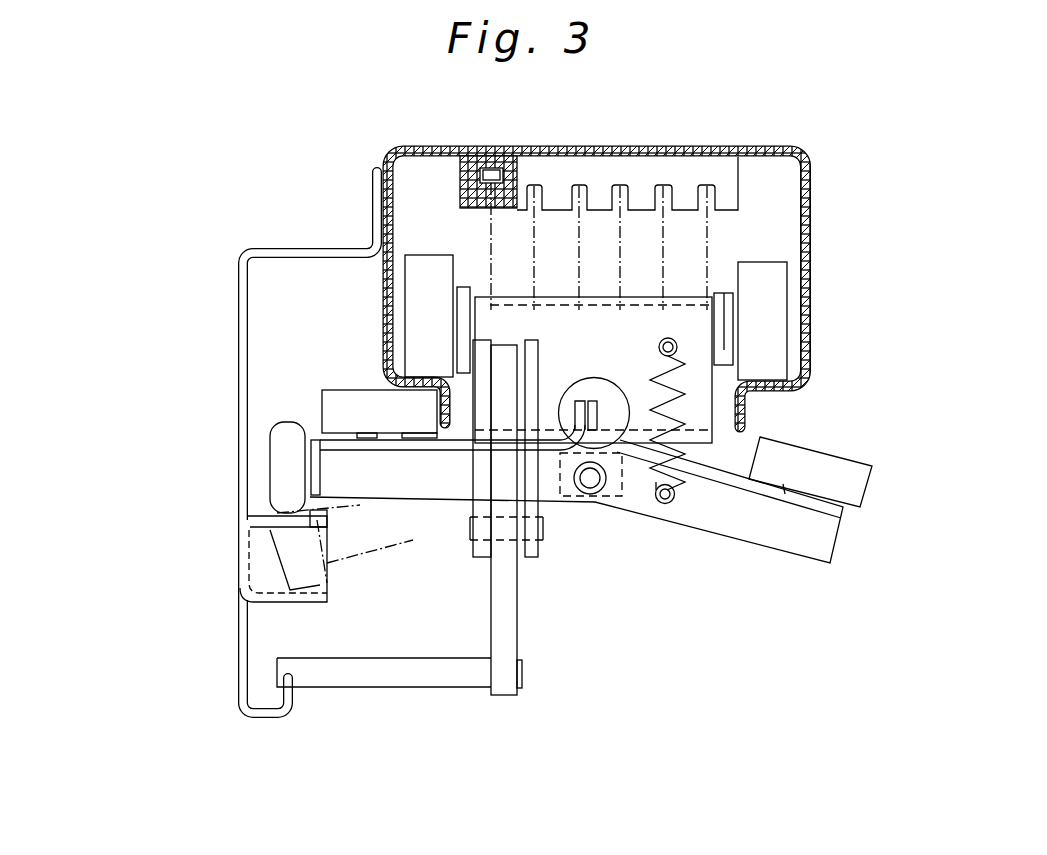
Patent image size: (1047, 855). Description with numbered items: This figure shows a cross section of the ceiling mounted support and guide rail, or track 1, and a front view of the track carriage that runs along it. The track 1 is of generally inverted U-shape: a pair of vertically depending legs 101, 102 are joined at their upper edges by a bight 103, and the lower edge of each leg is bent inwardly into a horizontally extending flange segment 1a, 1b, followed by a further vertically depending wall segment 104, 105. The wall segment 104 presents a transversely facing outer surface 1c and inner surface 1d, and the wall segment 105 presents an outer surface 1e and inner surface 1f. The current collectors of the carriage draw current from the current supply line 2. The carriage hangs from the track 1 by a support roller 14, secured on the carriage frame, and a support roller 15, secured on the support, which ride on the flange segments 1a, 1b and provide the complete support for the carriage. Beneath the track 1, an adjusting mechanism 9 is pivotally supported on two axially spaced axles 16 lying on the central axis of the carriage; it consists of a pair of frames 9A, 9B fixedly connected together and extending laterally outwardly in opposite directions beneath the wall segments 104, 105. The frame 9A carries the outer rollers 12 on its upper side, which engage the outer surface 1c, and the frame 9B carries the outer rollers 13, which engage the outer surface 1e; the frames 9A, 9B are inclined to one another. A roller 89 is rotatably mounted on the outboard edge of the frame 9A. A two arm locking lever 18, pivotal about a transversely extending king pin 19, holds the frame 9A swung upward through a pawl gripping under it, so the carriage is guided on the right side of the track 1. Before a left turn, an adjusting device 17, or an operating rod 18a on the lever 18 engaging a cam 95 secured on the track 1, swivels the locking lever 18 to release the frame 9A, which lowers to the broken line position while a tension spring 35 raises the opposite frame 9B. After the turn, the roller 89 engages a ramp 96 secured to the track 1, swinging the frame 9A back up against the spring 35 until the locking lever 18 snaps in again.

The track 1 is at (447, 140).
The flange segment 1a is at (423, 370).
The flange segment 1b is at (764, 372).
The outer surface 1c is at (438, 402).
The inner surface 1d is at (450, 403).
The outer surface 1e is at (757, 409).
The inner surface 1f is at (731, 412).
The current supply line 2 is at (522, 156).
The adjusting mechanism 9 is at (856, 518).
The frame 9A is at (313, 428).
The frame 9B is at (823, 541).
The outer rollers 12 is at (345, 408).
The outer rollers 13 is at (857, 480).
The support roller 14 is at (425, 278).
The support roller 15 is at (812, 260).
The axles 16 is at (593, 480).
The adjusting device 17 is at (613, 418).
The two arm locking lever 18 is at (513, 618).
The operating rod 18a is at (355, 675).
The king pin 19 is at (541, 540).
The tension spring 35 is at (670, 457).
The roller 89 is at (287, 442).
The cam 95 is at (240, 660).
The ramp 96 is at (243, 550).
The leg 101 is at (385, 282).
The leg 102 is at (808, 208).
The bight 103 is at (630, 150).
The wall segment 104 is at (448, 405).
The wall segment 105 is at (737, 372).